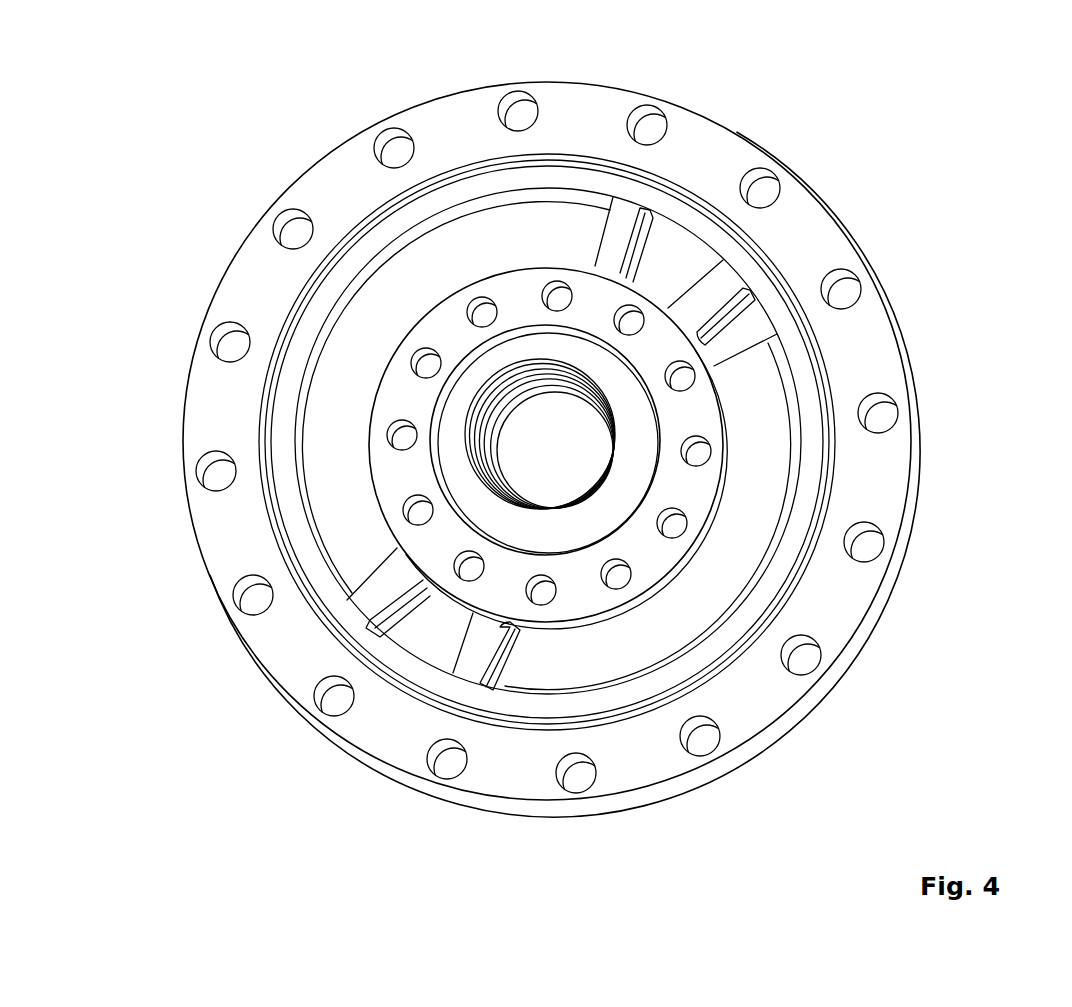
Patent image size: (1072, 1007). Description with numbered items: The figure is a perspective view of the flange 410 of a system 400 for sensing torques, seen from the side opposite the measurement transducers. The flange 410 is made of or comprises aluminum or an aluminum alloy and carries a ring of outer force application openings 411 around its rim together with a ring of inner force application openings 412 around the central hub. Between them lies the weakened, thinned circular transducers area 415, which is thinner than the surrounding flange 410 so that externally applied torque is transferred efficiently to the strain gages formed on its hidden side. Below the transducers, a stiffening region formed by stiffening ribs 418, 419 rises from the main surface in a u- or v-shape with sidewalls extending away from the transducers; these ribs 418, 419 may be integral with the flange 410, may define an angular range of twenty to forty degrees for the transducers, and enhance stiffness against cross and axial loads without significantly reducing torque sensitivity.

The system for sensing torques 400 is at (152, 93).
The flange 410 is at (913, 380).
The outer force application openings 411 is at (886, 422).
The inner force application openings 412 is at (627, 573).
The circular transducers area 415 is at (770, 393).
The stiffening ribs 418 is at (615, 235).
The stiffening ribs 419 is at (360, 608).